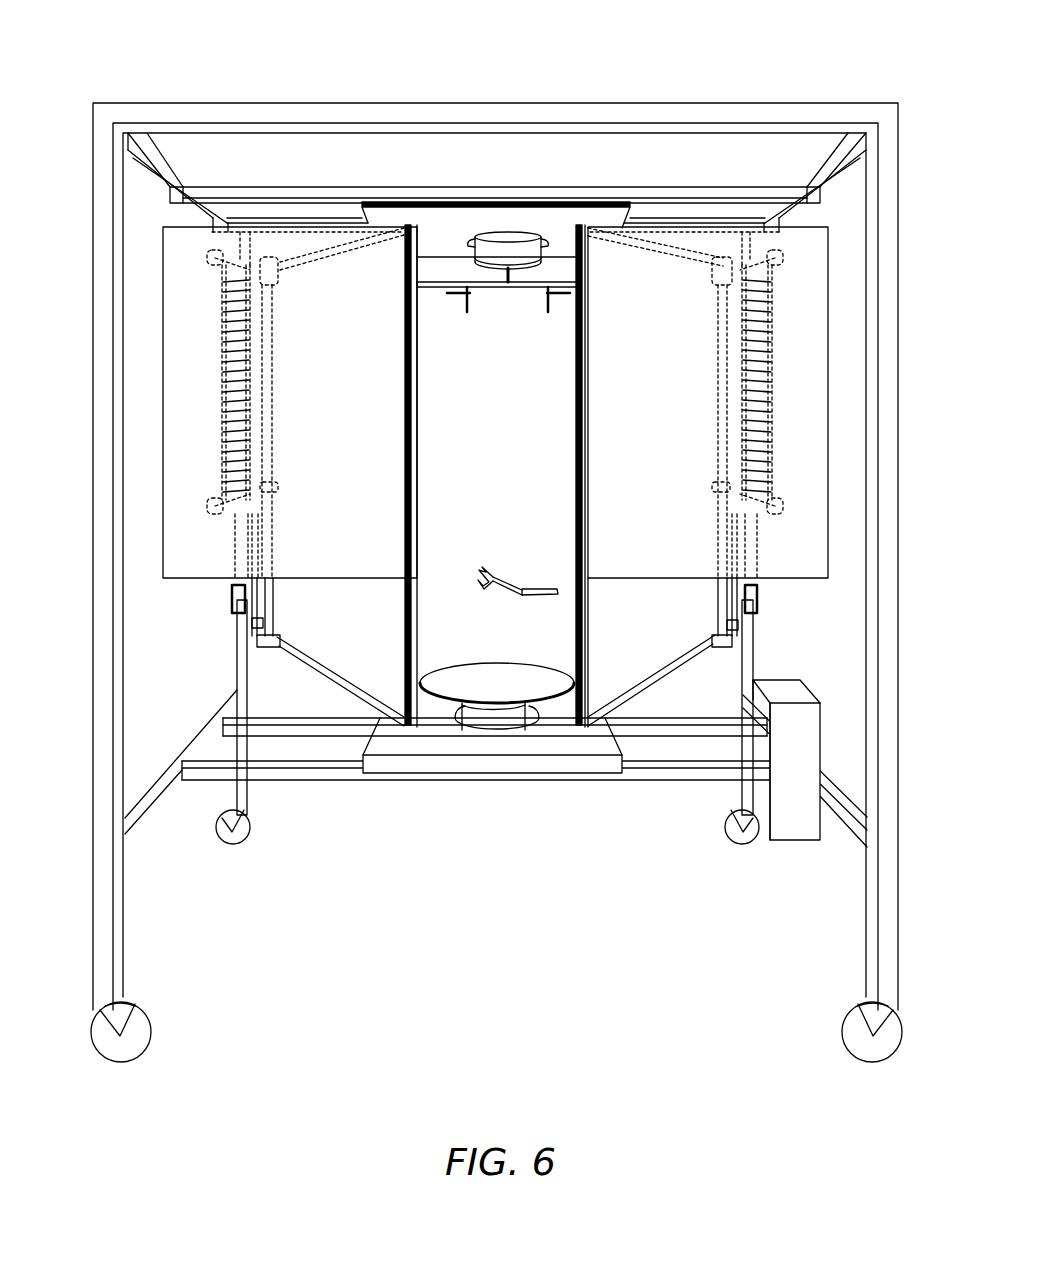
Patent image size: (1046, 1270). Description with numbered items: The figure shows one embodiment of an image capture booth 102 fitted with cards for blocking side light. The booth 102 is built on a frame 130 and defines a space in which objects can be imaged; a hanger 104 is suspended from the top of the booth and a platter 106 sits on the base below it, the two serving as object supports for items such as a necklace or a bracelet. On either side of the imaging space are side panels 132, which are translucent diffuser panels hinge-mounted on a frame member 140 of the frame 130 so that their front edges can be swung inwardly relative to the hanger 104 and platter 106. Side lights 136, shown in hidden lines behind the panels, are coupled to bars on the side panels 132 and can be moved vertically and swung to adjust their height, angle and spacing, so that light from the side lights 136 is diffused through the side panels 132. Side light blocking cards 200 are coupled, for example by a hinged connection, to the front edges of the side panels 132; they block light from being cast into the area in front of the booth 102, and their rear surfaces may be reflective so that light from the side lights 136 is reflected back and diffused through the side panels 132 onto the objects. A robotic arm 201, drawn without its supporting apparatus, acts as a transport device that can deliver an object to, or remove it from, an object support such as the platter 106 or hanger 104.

The image capture booth 102 is at (203, 71).
The hanger 104 is at (497, 290).
The platter 106 is at (510, 698).
The frame 130 is at (123, 940).
The side panels 132 is at (392, 655).
The side lights 136 is at (240, 421).
The frame member 140 is at (237, 660).
The side light blocking cards 200 is at (384, 563).
The robotic arm 201 is at (540, 598).